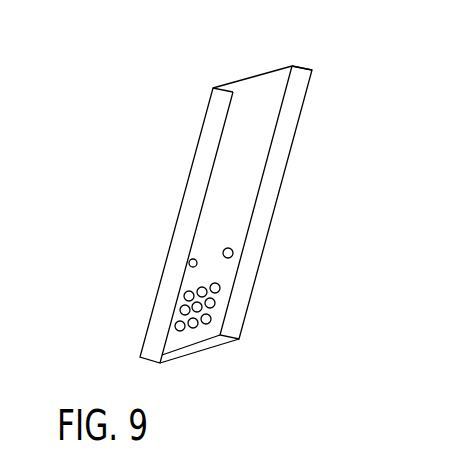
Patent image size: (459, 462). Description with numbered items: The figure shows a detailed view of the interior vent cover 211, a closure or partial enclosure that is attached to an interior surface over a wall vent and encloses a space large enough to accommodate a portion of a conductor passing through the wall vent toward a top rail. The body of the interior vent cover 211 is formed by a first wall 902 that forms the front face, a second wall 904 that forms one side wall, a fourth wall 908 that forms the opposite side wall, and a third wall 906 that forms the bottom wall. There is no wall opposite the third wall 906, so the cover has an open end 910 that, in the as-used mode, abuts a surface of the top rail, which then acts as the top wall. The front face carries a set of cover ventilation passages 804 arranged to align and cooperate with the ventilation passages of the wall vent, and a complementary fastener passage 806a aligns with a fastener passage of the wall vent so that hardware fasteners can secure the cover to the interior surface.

The interior vent cover 211 is at (89, 90).
The first wall 902 is at (256, 93).
The second wall 904 is at (167, 325).
The fourth wall 908 is at (287, 127).
The open end 910 is at (272, 72).
The third wall 906 is at (198, 345).
The set of cover ventilation passages 804 is at (222, 315).
The complementary fastener passage 806a is at (189, 262).